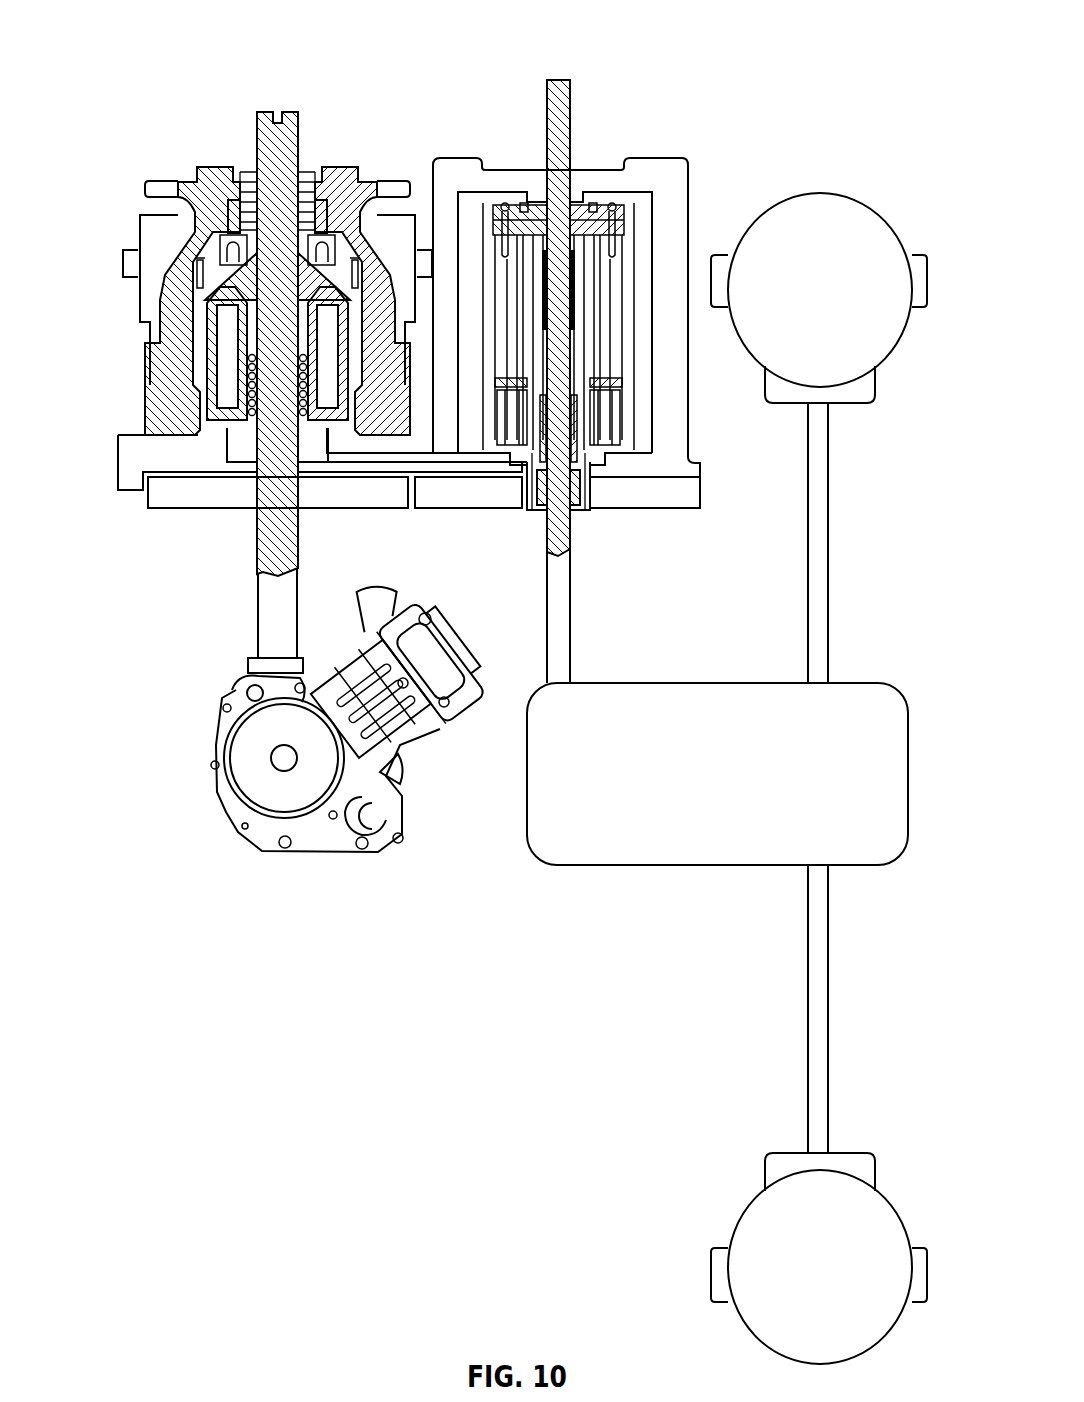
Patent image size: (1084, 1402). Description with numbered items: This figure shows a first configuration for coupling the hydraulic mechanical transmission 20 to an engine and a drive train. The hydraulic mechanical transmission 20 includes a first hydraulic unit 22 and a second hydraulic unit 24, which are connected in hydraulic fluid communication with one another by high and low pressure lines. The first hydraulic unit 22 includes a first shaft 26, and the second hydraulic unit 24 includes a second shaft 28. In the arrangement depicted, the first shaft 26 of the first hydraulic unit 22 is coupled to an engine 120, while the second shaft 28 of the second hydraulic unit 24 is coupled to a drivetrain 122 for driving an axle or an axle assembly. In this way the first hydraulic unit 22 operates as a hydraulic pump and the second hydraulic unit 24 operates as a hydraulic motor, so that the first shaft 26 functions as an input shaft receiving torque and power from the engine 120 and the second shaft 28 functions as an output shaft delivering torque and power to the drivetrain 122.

The hydraulic mechanical transmission 20 is at (157, 55).
The first hydraulic unit 22 is at (222, 142).
The second hydraulic unit 24 is at (589, 147).
The first shaft 26 is at (299, 138).
The second shaft 28 is at (546, 121).
The engine 120 is at (273, 837).
The drivetrain 122 is at (608, 868).